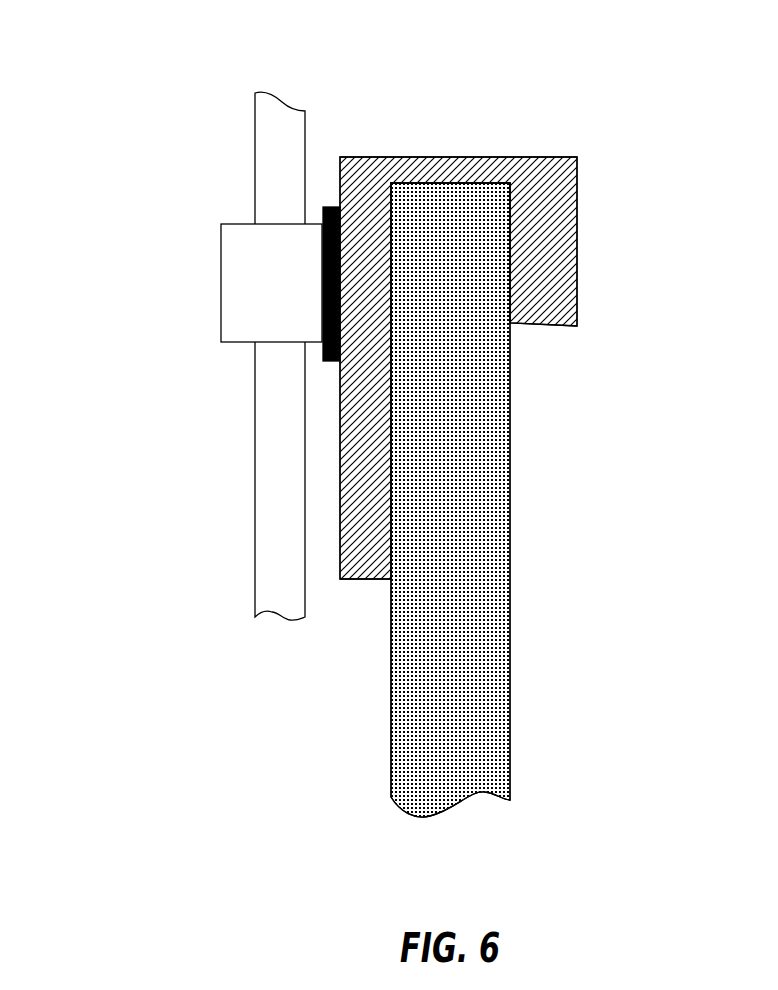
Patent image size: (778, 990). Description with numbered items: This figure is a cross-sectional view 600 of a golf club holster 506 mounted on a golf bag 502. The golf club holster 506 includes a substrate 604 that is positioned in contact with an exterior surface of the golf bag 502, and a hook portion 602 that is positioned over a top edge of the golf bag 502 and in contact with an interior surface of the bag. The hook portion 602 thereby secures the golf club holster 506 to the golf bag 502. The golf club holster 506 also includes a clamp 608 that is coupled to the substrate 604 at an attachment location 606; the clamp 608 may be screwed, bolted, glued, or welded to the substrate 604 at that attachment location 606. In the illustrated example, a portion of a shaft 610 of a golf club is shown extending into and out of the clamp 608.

The cross-sectional view 600 is at (98, 27).
The golf club holster 506 is at (426, 108).
The golf bag 502 is at (492, 648).
The hook portion 602 is at (578, 277).
The substrate 604 is at (358, 580).
The attachment location 606 is at (323, 206).
The clamp 608 is at (221, 293).
The shaft 610 is at (255, 155).